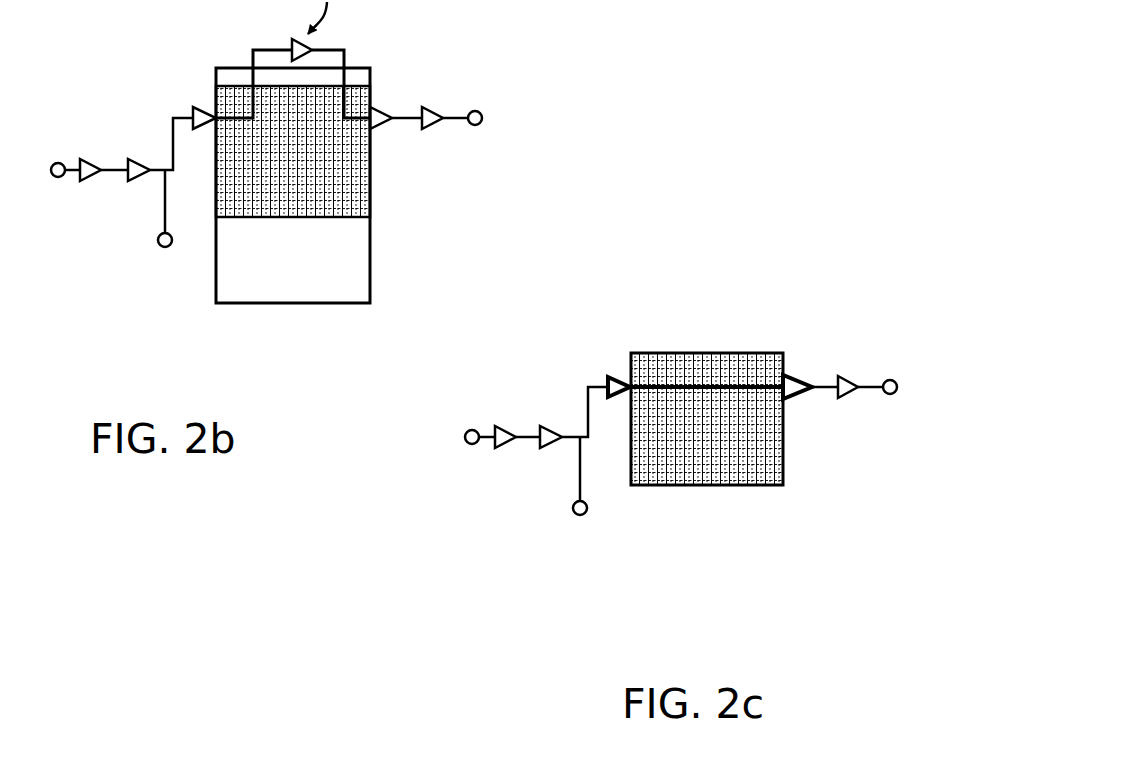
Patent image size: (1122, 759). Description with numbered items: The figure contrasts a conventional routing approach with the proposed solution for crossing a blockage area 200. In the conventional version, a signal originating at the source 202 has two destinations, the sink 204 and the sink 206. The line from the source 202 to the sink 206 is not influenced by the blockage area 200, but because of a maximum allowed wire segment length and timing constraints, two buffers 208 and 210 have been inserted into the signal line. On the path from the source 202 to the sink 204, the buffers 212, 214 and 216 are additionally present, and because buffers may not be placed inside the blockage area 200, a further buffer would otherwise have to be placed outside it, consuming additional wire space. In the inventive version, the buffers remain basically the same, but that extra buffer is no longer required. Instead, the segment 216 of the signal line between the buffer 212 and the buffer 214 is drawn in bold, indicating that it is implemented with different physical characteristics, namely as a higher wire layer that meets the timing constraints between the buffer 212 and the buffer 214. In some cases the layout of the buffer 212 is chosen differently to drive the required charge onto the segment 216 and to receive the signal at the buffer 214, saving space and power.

In FIG. 2b, the blockage area 200 is at (293, 152).
In FIG. 2c, the blockage area 200 is at (688, 350).
In FIG. 2b, the source 202 is at (58, 148).
In FIG. 2c, the source 202 is at (472, 420).
In FIG. 2b, the sink 204 is at (472, 108).
In FIG. 2c, the sink 204 is at (884, 366).
In FIG. 2b, the sink 206 is at (167, 256).
In FIG. 2c, the sink 206 is at (587, 528).
In FIG. 2b, the buffer 208 is at (84, 194).
In FIG. 2c, the buffer 208 is at (502, 458).
In FIG. 2b, the buffer 210 is at (131, 144).
In FIG. 2c, the buffer 210 is at (543, 414).
In FIG. 2b, the buffer 212 is at (203, 98).
In FIG. 2c, the buffer 212 is at (618, 366).
In FIG. 2b, the buffer 214 is at (384, 152).
In FIG. 2c, the buffer 214 is at (800, 366).
In FIG. 2b, the segment of the signal line (buffer) 216 is at (436, 152).
In FIG. 2c, the segment of the signal line (buffer) 216 is at (730, 380).